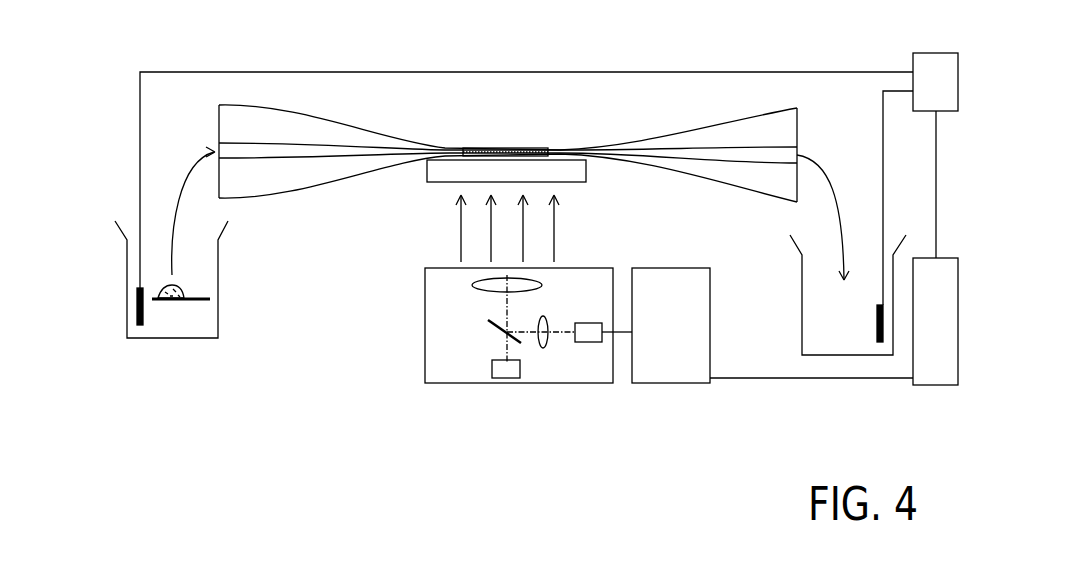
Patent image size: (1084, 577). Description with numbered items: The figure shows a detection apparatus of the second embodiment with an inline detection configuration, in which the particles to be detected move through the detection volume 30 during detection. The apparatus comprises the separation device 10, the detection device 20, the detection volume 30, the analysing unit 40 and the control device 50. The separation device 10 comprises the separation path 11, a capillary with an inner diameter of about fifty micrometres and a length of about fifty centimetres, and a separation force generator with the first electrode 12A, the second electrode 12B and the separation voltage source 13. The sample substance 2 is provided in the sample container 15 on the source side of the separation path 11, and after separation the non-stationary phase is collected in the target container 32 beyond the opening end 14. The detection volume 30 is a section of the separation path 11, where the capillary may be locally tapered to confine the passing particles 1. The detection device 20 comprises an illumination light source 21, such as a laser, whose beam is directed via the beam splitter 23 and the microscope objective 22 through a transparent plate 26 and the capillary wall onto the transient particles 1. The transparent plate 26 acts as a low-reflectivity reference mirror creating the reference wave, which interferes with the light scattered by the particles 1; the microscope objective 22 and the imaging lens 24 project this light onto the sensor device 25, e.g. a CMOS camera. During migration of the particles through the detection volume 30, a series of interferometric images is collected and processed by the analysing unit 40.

The separation device 10 is at (113, 63).
The separation path 11 is at (300, 130).
The opening end 14 is at (797, 150).
The detection volume 30 is at (584, 140).
The particles 1 is at (460, 155).
The transparent plate 26 is at (555, 170).
The detection device 20 is at (457, 377).
The microscope objective 22 is at (470, 284).
The illumination light source 21 is at (492, 363).
The beam splitter 23 is at (518, 338).
The imaging lens 24 is at (546, 335).
The sensor device 25 is at (585, 334).
The analysing unit 40 is at (700, 377).
The separation voltage source 13 is at (936, 82).
The control device 50 is at (950, 377).
The target container 32 is at (825, 312).
The second electrode 12B is at (876, 325).
The first electrode 12A is at (137, 310).
The sample container 15 is at (160, 330).
The sample substance 2 is at (190, 300).